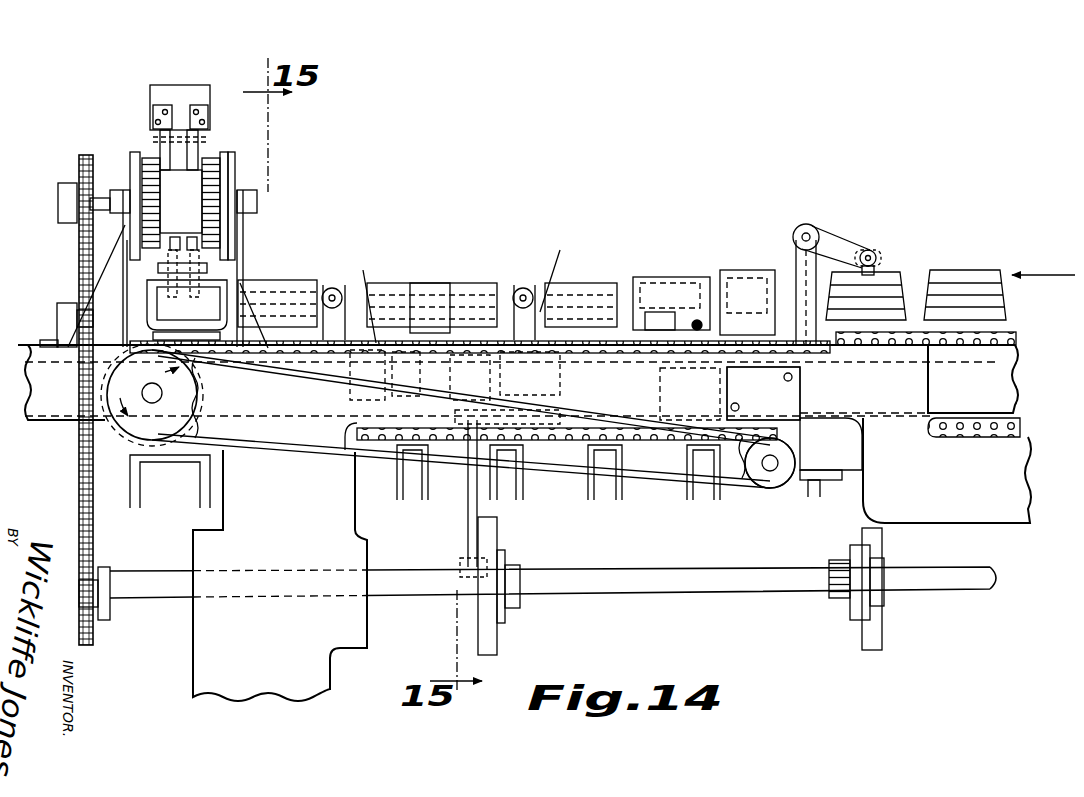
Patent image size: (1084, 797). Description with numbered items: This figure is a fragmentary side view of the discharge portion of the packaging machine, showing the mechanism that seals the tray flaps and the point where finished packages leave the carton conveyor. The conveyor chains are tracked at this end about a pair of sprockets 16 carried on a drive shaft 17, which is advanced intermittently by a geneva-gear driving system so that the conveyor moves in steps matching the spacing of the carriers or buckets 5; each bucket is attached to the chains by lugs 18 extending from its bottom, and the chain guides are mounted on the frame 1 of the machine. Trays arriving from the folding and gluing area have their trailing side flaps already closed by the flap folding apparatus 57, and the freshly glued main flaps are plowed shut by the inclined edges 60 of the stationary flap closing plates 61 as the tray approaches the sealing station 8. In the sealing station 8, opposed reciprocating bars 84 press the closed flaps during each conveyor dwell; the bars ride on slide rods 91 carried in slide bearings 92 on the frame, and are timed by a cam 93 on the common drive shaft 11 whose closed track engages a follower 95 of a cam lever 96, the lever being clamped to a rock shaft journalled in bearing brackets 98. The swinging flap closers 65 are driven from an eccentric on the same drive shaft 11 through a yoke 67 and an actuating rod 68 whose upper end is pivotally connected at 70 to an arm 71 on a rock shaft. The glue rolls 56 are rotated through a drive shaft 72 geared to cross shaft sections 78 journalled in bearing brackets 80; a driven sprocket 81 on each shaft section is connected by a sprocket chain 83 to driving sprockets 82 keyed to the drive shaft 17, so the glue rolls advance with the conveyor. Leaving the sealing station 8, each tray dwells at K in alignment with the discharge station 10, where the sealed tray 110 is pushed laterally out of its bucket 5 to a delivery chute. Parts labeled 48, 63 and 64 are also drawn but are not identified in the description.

The frame 1 is at (218, 620).
The carrier or bucket 5 is at (142, 486).
The flap sealing station 8 is at (393, 272).
The discharge station 10 is at (262, 166).
The common drive shaft 11 is at (653, 598).
The sprockets 16 is at (80, 428).
The drive shaft 17 is at (165, 382).
The lugs 18 is at (182, 358).
The carrier box 48 is at (975, 282).
The glue rolls 56 is at (742, 347).
The flap folding apparatus 57 is at (845, 230).
The inclined edges 60 is at (697, 320).
The stationary flap closing plates 61 is at (653, 300).
The pulley 63 is at (806, 224).
The arm 64 is at (790, 258).
The swinging flap closers 65 is at (855, 248).
The yoke 67 is at (880, 575).
The actuating rod 68 is at (866, 524).
The pivotal connection 70 is at (878, 260).
The arm 71 is at (885, 238).
The drive shaft 72 is at (831, 449).
The cross shaft sections 78 is at (767, 451).
The bearing brackets 80 is at (792, 393).
The driven sprocket 81 is at (770, 476).
The driving sprockets 82 is at (197, 408).
The sprocket chain 83 is at (665, 470).
The reciprocating bars 84 is at (425, 298).
The slide rods 91 is at (330, 292).
The slide bearings 92 is at (464, 285).
The cam 93 is at (498, 535).
The follower 95 is at (462, 582).
The cam lever 96 is at (472, 494).
The bearing brackets 98 is at (565, 388).
The sealed tray 110 is at (187, 295).
The dwell position K is at (232, 288).